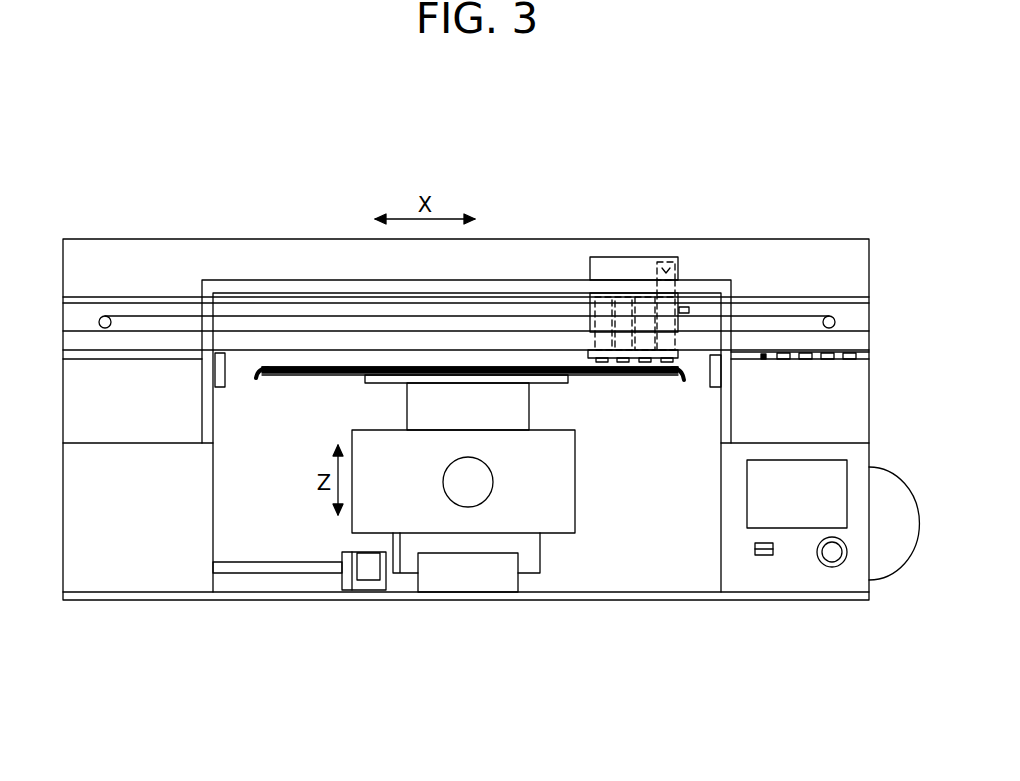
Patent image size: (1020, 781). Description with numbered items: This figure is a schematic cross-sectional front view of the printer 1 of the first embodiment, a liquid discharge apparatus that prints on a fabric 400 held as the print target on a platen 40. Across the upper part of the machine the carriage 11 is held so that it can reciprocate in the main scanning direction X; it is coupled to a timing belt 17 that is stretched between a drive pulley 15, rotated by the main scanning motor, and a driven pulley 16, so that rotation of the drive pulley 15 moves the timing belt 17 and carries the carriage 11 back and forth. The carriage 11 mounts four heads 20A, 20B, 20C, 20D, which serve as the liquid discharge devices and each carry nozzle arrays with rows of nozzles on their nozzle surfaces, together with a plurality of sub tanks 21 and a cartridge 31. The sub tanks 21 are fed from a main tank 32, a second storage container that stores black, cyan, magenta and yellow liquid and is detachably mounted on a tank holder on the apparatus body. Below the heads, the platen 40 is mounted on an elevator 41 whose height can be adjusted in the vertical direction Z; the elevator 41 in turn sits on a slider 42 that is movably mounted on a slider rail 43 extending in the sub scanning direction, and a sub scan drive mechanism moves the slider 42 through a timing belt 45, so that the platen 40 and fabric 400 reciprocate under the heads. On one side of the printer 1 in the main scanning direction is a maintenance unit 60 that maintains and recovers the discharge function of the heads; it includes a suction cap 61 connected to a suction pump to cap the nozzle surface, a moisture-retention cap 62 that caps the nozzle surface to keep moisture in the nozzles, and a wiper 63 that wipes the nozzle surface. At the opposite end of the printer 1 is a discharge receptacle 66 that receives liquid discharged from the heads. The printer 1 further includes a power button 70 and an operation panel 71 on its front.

The printer 1 is at (372, 167).
The carriage 11 is at (628, 265).
The drive pulley 15 is at (105, 316).
The driven pulley 16 is at (829, 316).
The timing belt 17 is at (172, 316).
The head 20A is at (600, 364).
The head 20B is at (622, 364).
The head 20C is at (645, 364).
The head 20D is at (667, 364).
The sub tank 21 is at (649, 296).
The cartridge 31 is at (665, 262).
The main tank 32 is at (885, 485).
The platen 40 is at (305, 375).
The fabric 400 is at (262, 375).
The elevator 41 is at (508, 413).
The slider 42 is at (418, 523).
The slider rail 43 is at (468, 580).
The timing belt 45 is at (367, 575).
The maintenance unit 60 is at (862, 368).
The suction cap 61 is at (785, 363).
The moisture-retention cap 62 is at (848, 363).
The wiper 63 is at (763, 363).
The discharge receptacle 66 is at (77, 402).
The power button 70 is at (832, 556).
The operation panel 71 is at (797, 520).